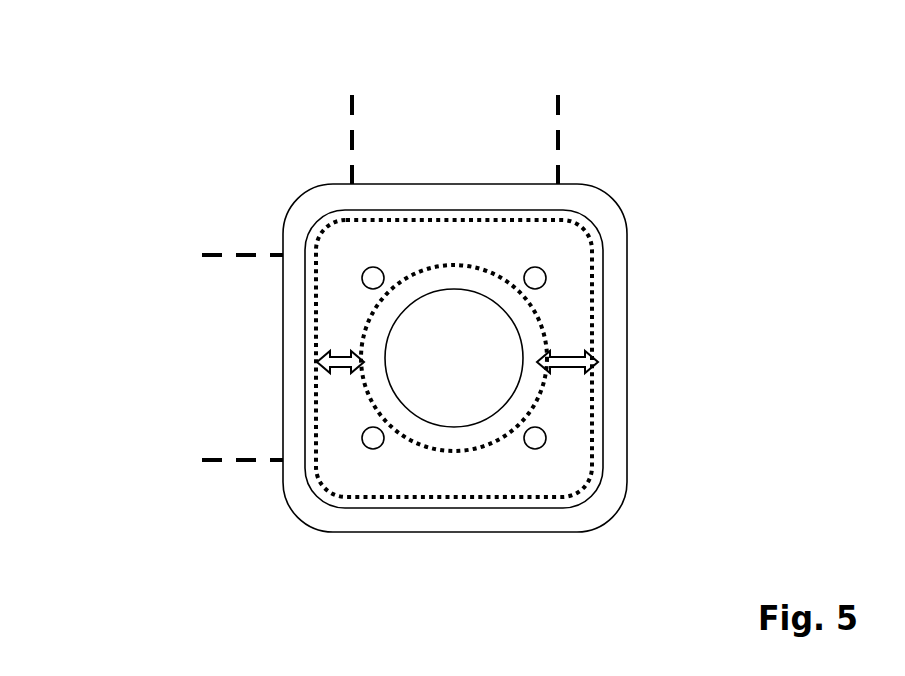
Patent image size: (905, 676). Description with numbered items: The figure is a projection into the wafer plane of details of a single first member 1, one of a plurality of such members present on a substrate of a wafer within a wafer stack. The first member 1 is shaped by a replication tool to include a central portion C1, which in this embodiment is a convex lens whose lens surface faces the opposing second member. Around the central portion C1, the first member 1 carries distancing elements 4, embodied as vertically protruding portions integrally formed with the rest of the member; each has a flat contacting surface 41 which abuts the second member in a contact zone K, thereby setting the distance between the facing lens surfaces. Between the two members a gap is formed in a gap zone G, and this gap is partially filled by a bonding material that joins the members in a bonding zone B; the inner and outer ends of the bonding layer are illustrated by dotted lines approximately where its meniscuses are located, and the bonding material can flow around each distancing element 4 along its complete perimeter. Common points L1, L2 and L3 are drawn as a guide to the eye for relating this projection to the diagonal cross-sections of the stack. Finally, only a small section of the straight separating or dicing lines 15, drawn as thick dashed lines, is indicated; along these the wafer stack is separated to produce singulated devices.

The first member 1 is at (92, 117).
The dicing lines 15 is at (558, 115).
The common point L1 is at (282, 230).
The common point L2 is at (315, 227).
The common point L3 is at (405, 310).
The distancing elements 4 is at (482, 358).
The flat contacting surface 41 is at (482, 358).
The contact zone K is at (373, 278).
The bonding zone B is at (340, 348).
The gap zone G is at (567, 347).
The central portion C1 is at (453, 388).